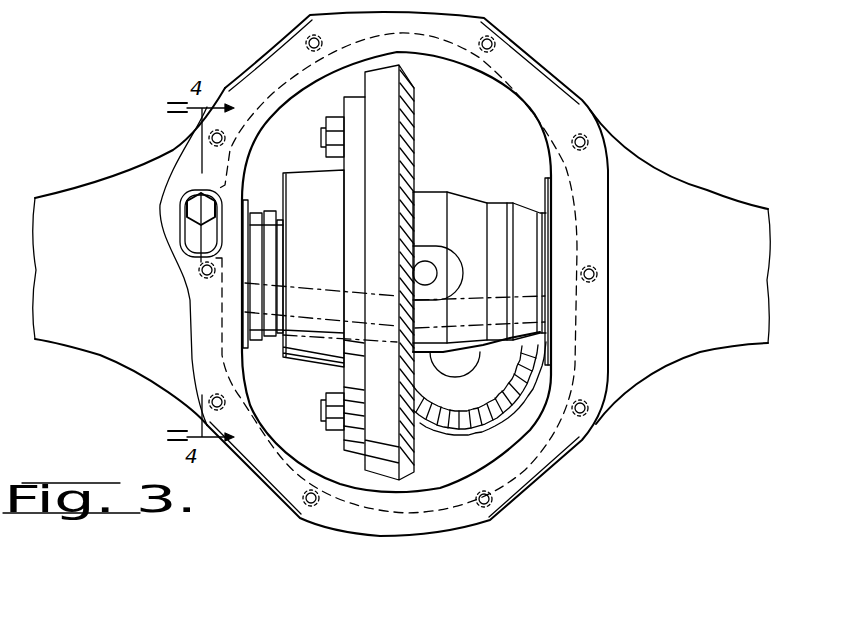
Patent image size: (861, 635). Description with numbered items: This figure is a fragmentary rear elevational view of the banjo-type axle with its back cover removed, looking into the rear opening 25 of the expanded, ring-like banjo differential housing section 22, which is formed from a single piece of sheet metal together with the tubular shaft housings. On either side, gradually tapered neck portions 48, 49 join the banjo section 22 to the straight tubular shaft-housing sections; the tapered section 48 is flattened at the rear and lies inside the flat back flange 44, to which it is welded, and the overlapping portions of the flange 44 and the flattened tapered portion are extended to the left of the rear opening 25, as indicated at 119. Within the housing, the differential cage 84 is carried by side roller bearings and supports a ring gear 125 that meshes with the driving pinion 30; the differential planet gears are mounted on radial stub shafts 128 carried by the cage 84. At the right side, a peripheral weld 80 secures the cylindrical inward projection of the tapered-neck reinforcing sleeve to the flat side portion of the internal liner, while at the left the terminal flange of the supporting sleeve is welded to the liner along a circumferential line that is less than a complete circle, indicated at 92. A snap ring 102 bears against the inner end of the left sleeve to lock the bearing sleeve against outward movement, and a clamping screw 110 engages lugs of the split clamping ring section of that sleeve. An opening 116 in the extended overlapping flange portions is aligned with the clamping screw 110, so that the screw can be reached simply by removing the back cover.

The banjo differential housing section 22 is at (264, 54).
The rear opening 25 is at (480, 97).
The driving pinion 30 is at (465, 412).
The flat back flange 44 is at (304, 46).
The tapered neck portion 48 is at (104, 181).
The tapered neck portion 49 is at (631, 167).
The peripheral weld 80 is at (548, 176).
The differential cage 84 is at (454, 197).
The circumferential weld line 92 is at (240, 290).
The snap ring 102 is at (267, 338).
The clamping screw 110 is at (193, 210).
The opening 116 is at (183, 233).
The extended overlapping flange portion 119 is at (165, 238).
The ring gear 125 is at (414, 138).
The radial stub shafts 128 is at (434, 274).